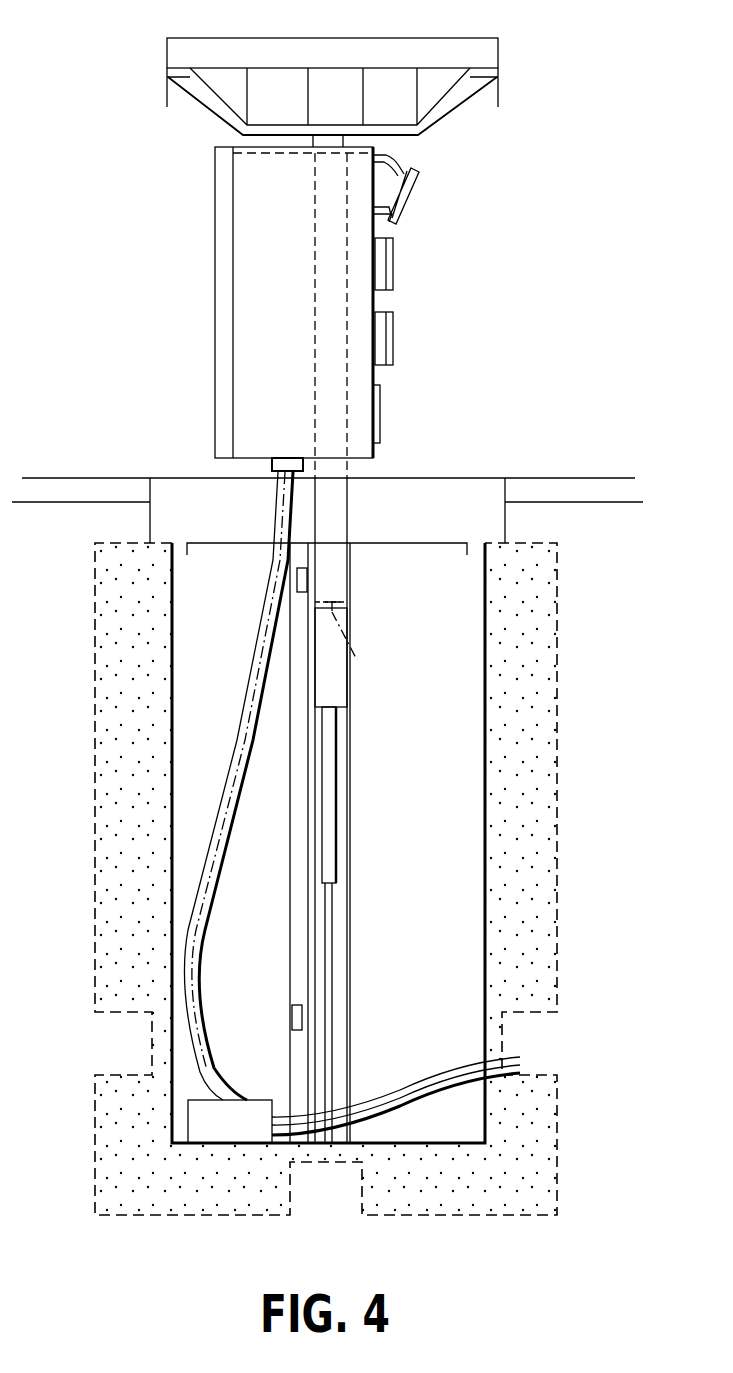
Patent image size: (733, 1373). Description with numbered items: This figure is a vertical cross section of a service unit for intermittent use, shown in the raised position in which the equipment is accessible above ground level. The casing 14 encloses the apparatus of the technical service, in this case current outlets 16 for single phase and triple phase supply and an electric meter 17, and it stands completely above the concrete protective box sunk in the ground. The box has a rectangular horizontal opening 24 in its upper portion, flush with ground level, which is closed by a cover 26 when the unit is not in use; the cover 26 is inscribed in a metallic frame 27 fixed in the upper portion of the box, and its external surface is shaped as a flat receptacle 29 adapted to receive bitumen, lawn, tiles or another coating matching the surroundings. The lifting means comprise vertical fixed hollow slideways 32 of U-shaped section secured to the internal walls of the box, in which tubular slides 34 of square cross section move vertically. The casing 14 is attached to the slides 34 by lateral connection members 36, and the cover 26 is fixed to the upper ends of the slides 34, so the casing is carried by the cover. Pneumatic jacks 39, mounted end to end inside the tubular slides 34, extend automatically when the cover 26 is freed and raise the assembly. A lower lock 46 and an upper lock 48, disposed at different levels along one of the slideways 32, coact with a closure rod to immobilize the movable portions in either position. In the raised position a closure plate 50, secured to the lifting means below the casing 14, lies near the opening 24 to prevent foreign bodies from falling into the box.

The casing 14 is at (265, 298).
The current outlets 16 is at (420, 202).
The electric meter 17 is at (383, 421).
The horizontal opening 24 is at (198, 468).
The cover 26 is at (237, 88).
The metallic frame 27 is at (505, 493).
The flat receptacle 29 is at (445, 38).
The hollow slideways 32 is at (350, 782).
The slides 34 is at (328, 693).
The lateral connection members 36 is at (360, 662).
The jacks 39 is at (328, 860).
The lower lock 46 is at (290, 1020).
The upper lock 48 is at (297, 580).
The closure plate 50 is at (420, 545).